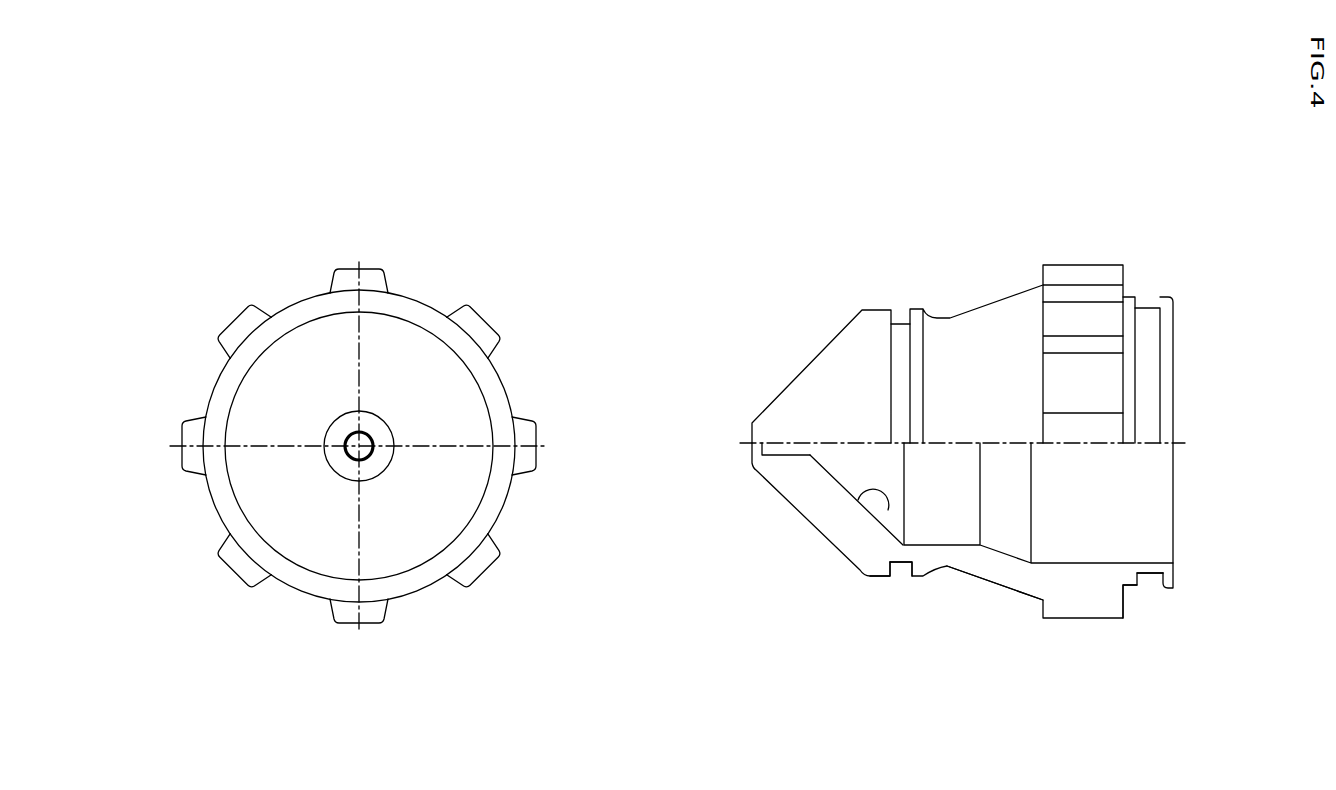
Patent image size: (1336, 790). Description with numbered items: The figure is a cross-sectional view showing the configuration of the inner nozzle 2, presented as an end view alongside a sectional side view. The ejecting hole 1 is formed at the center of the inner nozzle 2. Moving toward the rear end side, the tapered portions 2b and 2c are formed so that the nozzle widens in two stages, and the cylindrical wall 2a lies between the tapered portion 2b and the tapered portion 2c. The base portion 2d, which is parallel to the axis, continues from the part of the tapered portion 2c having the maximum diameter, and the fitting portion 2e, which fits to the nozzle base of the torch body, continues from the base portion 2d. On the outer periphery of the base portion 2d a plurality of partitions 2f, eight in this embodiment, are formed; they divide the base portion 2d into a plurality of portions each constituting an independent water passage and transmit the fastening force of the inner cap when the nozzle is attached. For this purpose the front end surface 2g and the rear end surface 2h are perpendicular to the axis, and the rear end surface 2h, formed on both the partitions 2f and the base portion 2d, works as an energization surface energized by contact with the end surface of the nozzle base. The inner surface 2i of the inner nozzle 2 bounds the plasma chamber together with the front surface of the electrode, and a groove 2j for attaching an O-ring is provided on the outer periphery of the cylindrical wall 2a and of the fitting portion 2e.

The ejecting hole 1 is at (362, 457).
The inner nozzle 2 is at (451, 285).
The cylindrical wall 2a is at (880, 576).
The tapered portion 2b is at (410, 552).
The tapered portion 2c is at (297, 583).
The base portion 2d is at (213, 509).
The fitting portion 2e is at (1118, 344).
The partitions 2f is at (486, 329).
The front end surface 2g is at (243, 326).
The rear end surface 2h is at (1124, 281).
The inner surface 2i is at (888, 510).
The groove 2j is at (900, 572).